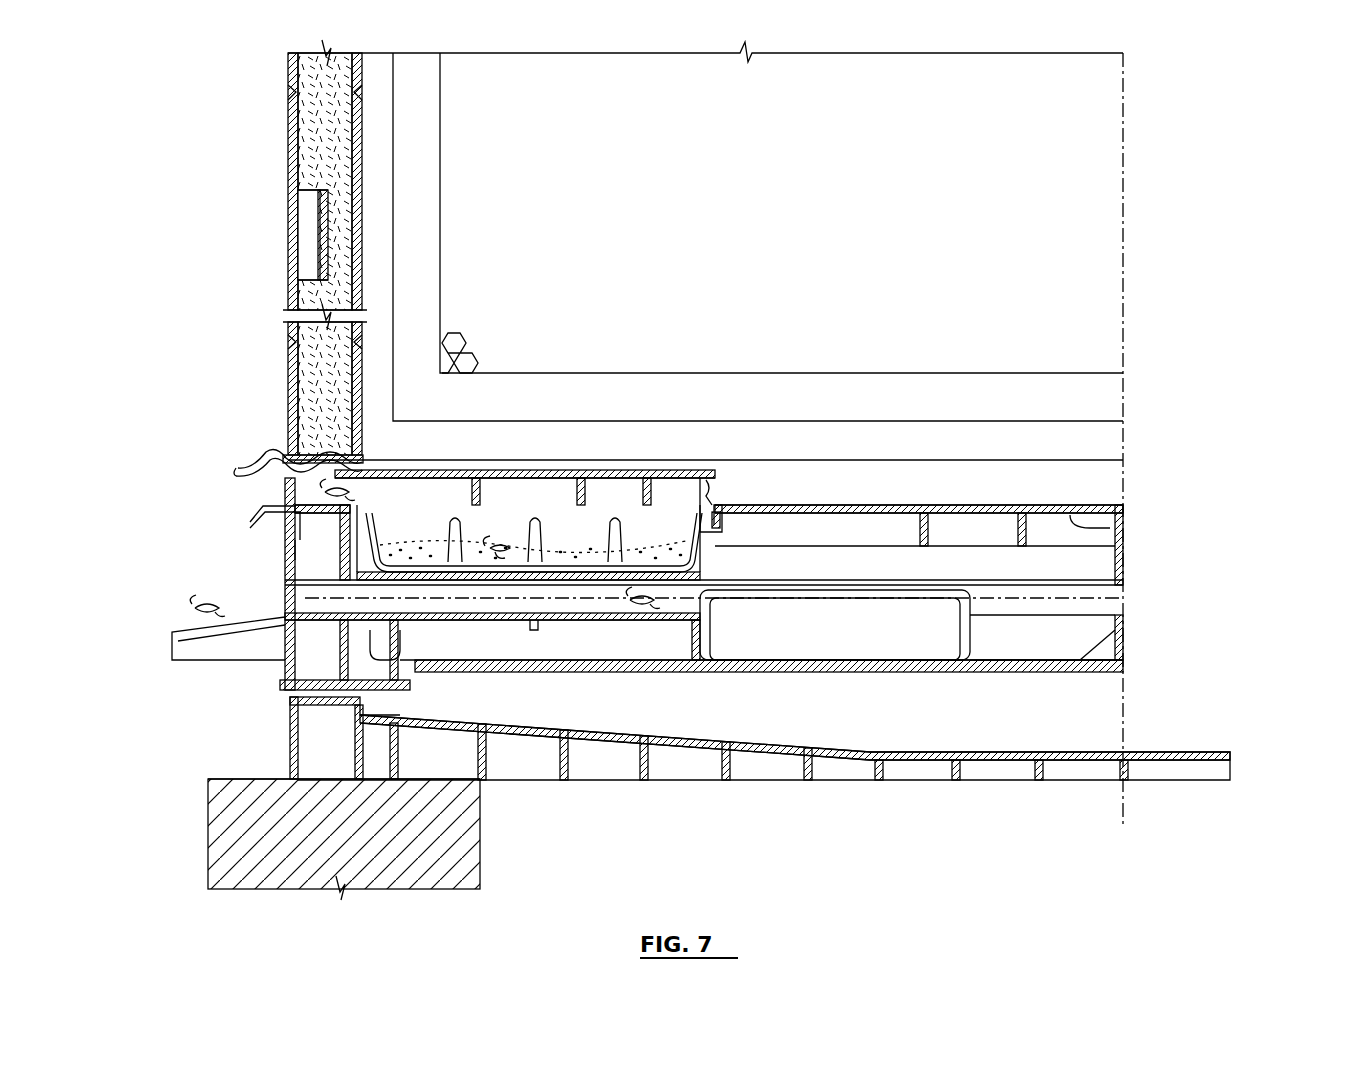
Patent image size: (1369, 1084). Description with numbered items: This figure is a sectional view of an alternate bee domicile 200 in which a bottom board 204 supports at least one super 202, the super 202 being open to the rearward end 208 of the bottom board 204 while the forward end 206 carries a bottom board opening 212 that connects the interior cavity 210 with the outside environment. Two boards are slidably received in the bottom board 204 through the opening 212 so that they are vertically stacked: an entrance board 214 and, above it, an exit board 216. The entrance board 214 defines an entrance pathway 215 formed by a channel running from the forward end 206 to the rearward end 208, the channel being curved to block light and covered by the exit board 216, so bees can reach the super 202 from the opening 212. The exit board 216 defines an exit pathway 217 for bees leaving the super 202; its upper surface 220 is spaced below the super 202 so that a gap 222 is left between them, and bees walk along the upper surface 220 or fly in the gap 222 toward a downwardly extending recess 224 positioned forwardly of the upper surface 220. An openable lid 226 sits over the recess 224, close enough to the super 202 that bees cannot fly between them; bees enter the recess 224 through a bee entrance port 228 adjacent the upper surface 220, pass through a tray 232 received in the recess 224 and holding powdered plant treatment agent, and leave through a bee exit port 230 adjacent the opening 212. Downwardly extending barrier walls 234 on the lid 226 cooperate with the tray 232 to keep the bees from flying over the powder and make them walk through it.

The bee domicile 200 is at (245, 250).
The super 202 is at (422, 185).
The bottom board 204 is at (295, 832).
The forward end 206 is at (198, 800).
The rearward end 208 is at (1248, 702).
The interior cavity 210 is at (960, 722).
The bottom board opening 212 is at (265, 572).
The entrance board 214 is at (1118, 644).
The entrance pathway 215 is at (442, 605).
The exit board 216 is at (1155, 558).
The exit pathway 217 is at (572, 545).
The upper surface 220 is at (1040, 505).
The gap 222 is at (852, 500).
The recess 224 is at (705, 561).
The openable lid 226 is at (437, 478).
The bee entrance port 228 is at (730, 487).
The bee exit port 230 is at (258, 490).
The tray 232 is at (330, 537).
The barrier wall 234 is at (472, 498).